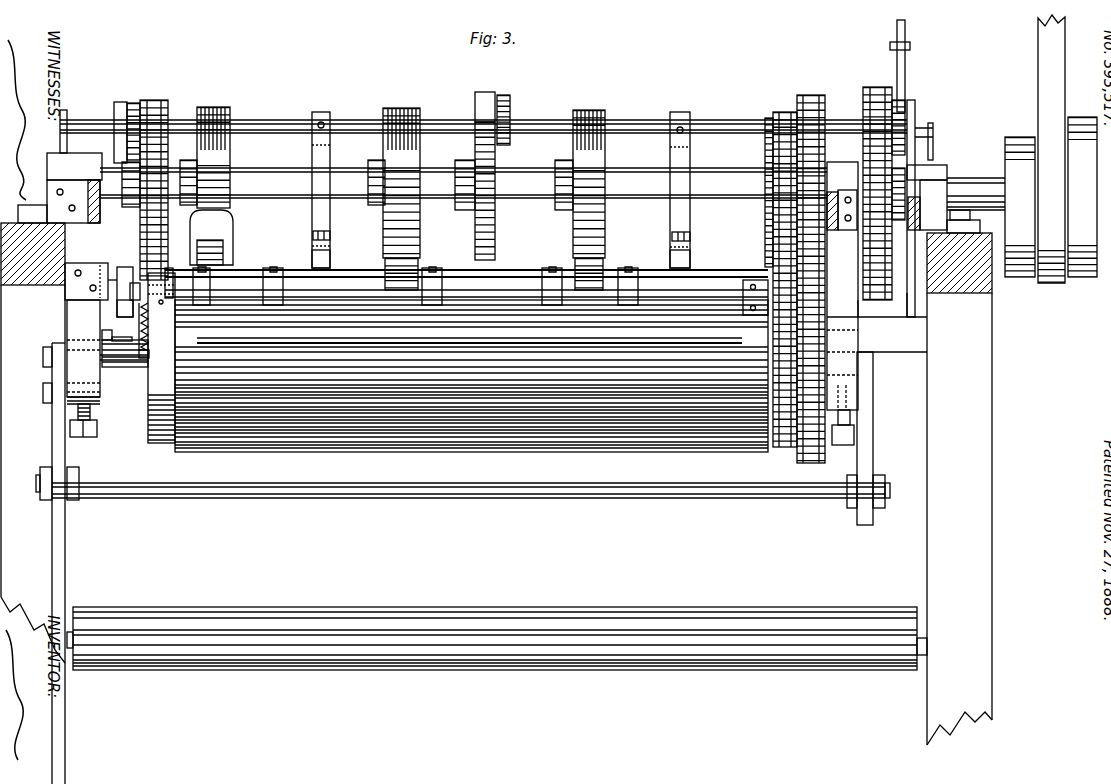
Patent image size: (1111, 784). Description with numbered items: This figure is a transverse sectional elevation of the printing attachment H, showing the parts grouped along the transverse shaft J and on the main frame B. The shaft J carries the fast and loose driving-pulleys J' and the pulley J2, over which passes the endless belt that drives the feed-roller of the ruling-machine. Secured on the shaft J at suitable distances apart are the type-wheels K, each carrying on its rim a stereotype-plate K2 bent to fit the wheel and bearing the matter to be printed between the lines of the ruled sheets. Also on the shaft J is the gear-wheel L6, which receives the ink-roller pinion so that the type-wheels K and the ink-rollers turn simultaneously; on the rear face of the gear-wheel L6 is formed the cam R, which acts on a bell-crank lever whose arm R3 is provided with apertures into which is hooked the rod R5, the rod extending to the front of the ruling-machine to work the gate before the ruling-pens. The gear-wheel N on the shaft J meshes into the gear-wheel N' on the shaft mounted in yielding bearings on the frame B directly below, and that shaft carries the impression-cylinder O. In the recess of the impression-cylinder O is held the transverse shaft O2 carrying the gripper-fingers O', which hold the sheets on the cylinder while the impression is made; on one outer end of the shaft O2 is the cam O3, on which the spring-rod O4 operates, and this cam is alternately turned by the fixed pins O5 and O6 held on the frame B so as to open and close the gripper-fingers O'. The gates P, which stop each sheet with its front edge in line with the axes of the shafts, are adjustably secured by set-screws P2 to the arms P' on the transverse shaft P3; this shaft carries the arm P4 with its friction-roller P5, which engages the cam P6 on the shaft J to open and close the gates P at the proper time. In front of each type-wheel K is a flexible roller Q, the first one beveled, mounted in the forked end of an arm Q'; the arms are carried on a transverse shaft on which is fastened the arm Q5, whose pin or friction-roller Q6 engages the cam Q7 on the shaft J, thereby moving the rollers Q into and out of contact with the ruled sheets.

The main frame B is at (496, 468).
The printing attachment H is at (483, 90).
The type-wheel K is at (392, 168).
The stereotype-plate K2 is at (147, 370).
The roller Q is at (408, 265).
The arm Q' is at (224, 237).
The arm Q5 is at (118, 102).
The pin or friction-roller Q6 is at (133, 103).
The cam Q7 is at (150, 108).
The gate P is at (512, 256).
The arm P' is at (510, 190).
The set-screw P2 is at (313, 235).
The transverse shaft P3 is at (304, 180).
The arm P4 is at (510, 100).
The friction-roller P5 is at (485, 95).
The cam P6 is at (495, 226).
The impression-cylinder O is at (471, 376).
The gripper-fingers O' is at (466, 291).
The transverse shaft O2 is at (264, 281).
The cam O3 is at (122, 292).
The spring-rod O4 is at (157, 358).
The fixed pin O5 is at (118, 262).
The fixed pin O6 is at (128, 345).
The gear-wheel N is at (787, 256).
The gear-wheel N' is at (796, 286).
The gear-wheel L6 is at (881, 178).
The cam R is at (912, 105).
The arm R3 is at (906, 72).
The rod R5 is at (908, 46).
The transverse shaft J is at (956, 192).
The pulley J2 is at (1016, 277).
The fast and loose driving-pulleys J' is at (1067, 161).